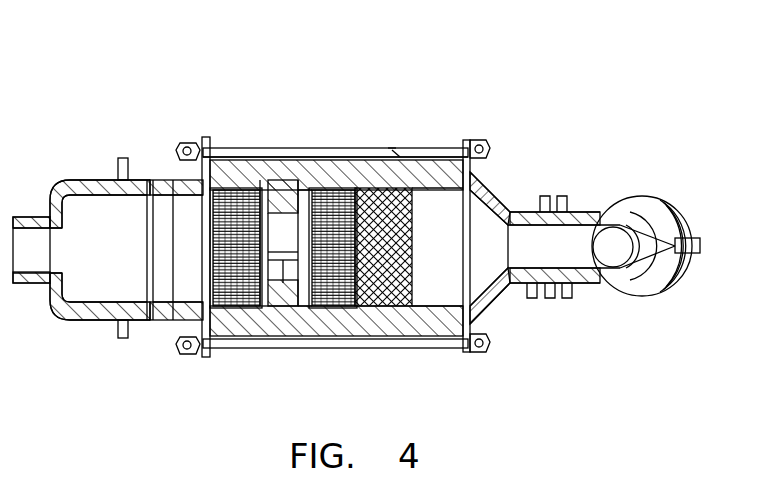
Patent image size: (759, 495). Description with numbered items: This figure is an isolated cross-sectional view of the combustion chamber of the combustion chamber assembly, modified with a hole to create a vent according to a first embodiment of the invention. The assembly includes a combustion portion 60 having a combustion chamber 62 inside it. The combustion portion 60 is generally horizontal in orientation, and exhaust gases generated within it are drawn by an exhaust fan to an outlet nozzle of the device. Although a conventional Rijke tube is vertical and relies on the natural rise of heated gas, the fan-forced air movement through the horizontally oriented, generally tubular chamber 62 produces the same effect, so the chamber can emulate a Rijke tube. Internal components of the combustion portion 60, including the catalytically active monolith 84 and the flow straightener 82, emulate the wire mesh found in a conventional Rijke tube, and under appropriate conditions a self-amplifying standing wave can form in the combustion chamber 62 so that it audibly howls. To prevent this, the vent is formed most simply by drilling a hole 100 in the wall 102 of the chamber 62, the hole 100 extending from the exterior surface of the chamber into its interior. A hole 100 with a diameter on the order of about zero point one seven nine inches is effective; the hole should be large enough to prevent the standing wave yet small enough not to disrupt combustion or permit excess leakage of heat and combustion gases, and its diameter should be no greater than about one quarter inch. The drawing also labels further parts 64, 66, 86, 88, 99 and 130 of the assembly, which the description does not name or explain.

The combustion portion 60 is at (428, 148).
The combustion chamber 62 is at (254, 165).
The connector 64 is at (80, 205).
The nozzle assembly 66 is at (488, 185).
The flow straightener 82 is at (240, 290).
The catalytically active monolith 84 is at (350, 292).
The coils 86 is at (225, 190).
The mesh screen 88 is at (385, 292).
The gap 99 is at (396, 152).
The hole 100 is at (391, 147).
The wall 102 is at (297, 157).
The core 130 is at (290, 282).